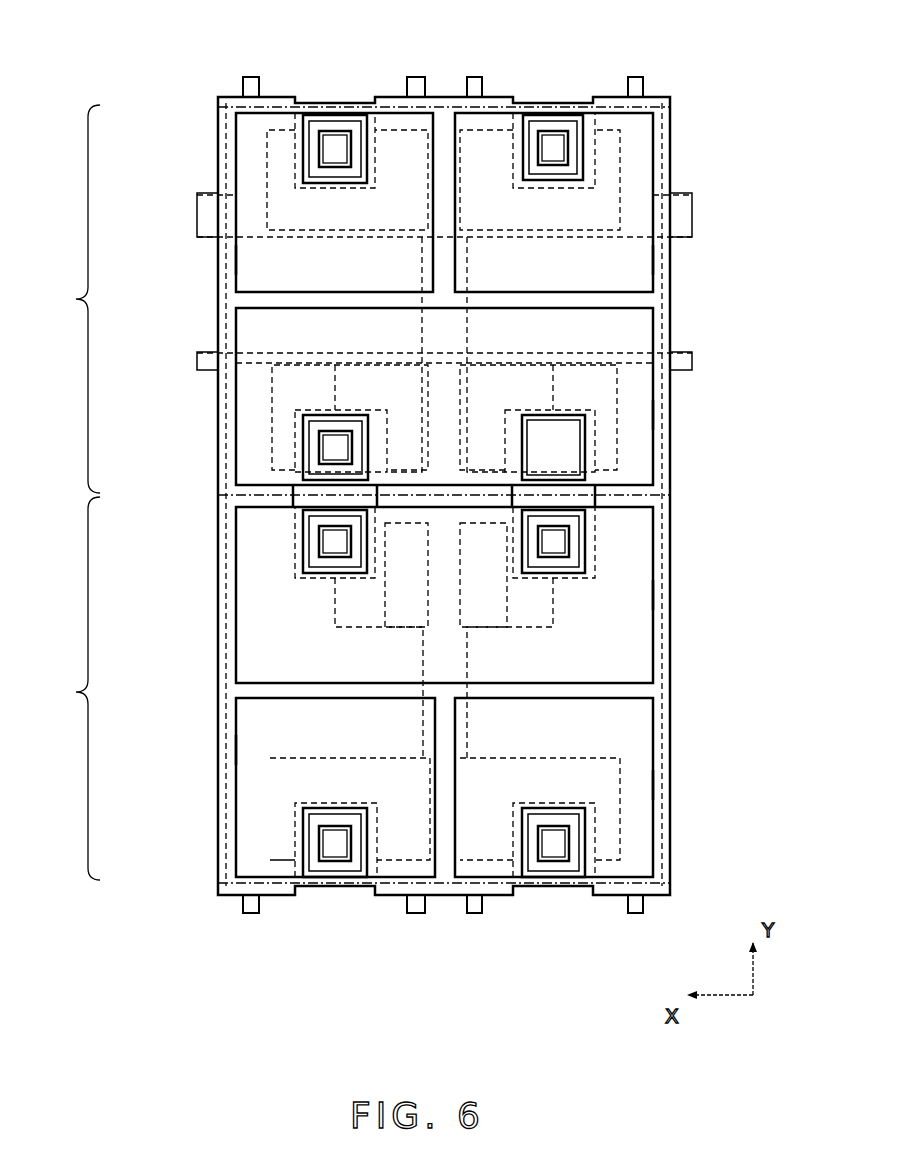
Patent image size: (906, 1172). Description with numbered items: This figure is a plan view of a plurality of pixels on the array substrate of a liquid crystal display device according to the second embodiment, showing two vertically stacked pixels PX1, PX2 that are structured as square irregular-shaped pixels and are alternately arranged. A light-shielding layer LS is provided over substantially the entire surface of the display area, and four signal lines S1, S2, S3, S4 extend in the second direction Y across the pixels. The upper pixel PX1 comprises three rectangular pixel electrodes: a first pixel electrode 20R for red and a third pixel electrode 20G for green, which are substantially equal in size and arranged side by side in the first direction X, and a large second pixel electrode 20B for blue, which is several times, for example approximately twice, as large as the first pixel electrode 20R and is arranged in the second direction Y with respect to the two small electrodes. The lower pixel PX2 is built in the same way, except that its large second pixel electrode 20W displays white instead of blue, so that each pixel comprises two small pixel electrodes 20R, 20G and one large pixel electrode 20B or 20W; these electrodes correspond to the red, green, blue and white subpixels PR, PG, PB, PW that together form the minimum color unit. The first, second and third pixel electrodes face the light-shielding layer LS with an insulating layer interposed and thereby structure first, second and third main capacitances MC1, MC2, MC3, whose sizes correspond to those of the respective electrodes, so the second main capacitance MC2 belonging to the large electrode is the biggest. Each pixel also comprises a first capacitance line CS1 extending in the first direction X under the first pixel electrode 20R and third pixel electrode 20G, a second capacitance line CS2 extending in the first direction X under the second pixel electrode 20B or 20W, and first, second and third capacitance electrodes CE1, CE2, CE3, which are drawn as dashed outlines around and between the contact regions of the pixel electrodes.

The pixel PX1 is at (63, 299).
The pixel PX2 is at (63, 688).
The first main capacitance MC1 is at (262, 162).
The second main capacitance MC2 is at (625, 328).
The third main capacitance MC3 is at (658, 172).
The subpixel displaying red PR is at (262, 135).
The subpixel displaying green PG is at (635, 148).
The subpixel displaying blue PB is at (262, 406).
The subpixel displaying white PW is at (262, 581).
The first capacitance electrode CE1 is at (377, 380).
The second capacitance electrode CE2 is at (297, 427).
The third capacitance electrode CE3 is at (503, 380).
The first capacitance line CS1 is at (205, 210).
The second capacitance line CS2 is at (205, 357).
The light-shielding layer LS is at (235, 300).
The first pixel electrode 20R is at (236, 252).
The third pixel electrode 20G is at (648, 268).
The second pixel electrode 20B is at (630, 418).
The second pixel electrode 20W is at (632, 597).
The first signal line S1 is at (252, 80).
The second signal line S2 is at (418, 80).
The third signal line S3 is at (476, 80).
The fourth signal line S4 is at (638, 80).